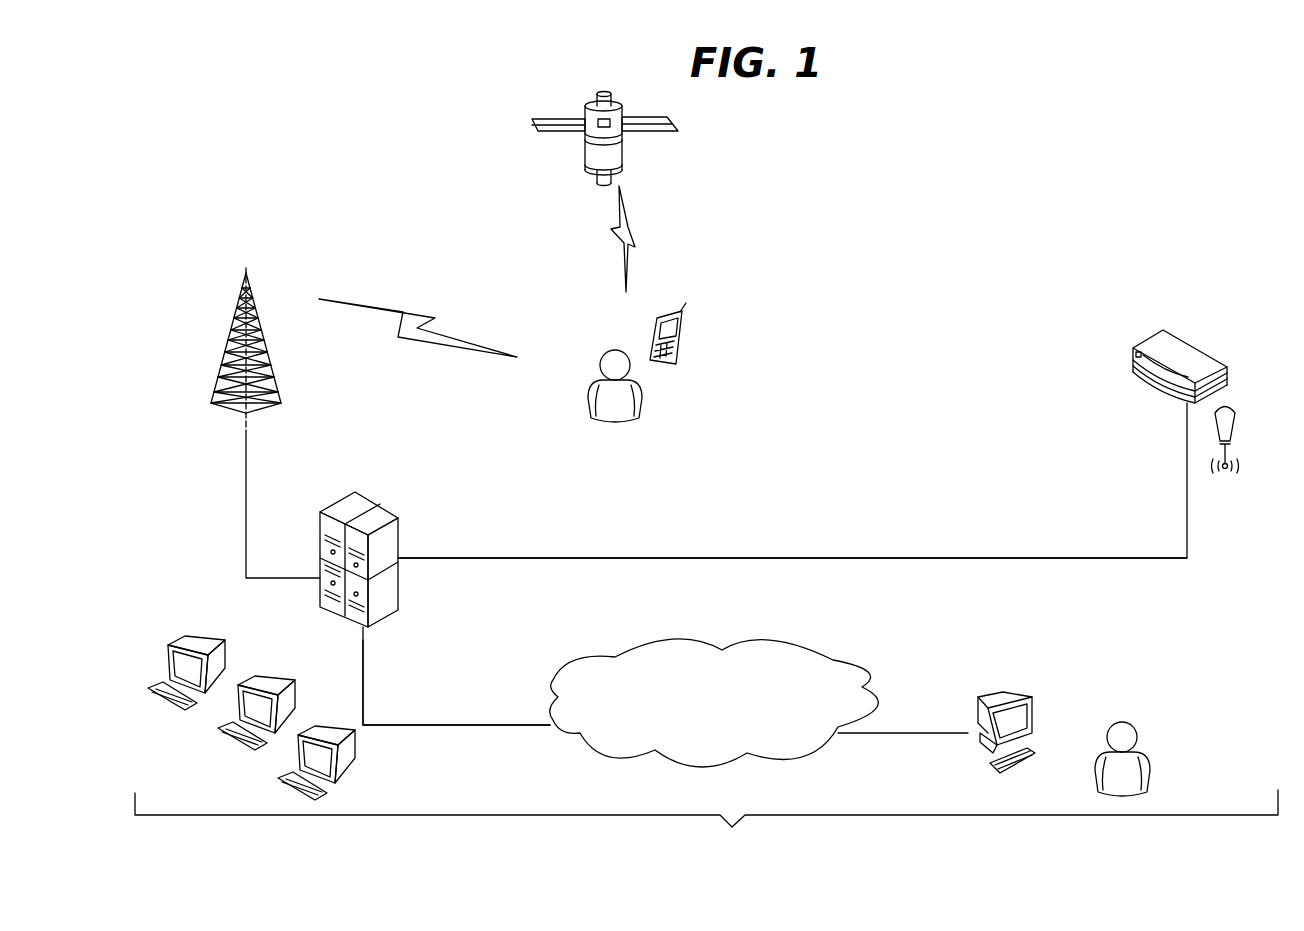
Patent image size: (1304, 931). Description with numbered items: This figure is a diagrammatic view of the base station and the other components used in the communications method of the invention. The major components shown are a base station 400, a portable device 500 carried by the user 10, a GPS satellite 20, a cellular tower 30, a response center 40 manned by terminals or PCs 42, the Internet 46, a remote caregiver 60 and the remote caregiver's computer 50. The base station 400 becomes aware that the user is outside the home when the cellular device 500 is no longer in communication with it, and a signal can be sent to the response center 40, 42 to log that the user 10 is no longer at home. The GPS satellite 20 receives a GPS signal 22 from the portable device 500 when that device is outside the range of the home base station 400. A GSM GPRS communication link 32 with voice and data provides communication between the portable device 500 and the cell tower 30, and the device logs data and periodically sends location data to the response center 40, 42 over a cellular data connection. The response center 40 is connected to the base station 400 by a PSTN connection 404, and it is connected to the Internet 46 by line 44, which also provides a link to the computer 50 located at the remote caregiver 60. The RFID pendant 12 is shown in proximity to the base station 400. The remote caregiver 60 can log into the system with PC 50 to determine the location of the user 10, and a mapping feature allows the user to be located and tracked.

The user 10 is at (618, 402).
The RFID pendant 12 is at (1235, 422).
The GPS satellite 20 is at (657, 122).
The GPS signal 22 is at (633, 236).
The cellular tower 30 is at (230, 323).
The GSM GPRS communication link 32 is at (403, 312).
The response center 40 is at (387, 505).
The terminals or PCs 42 is at (190, 640).
The line 44 is at (423, 723).
The Internet 46 is at (762, 665).
The computer 50 is at (1015, 695).
The remote caregiver 60 is at (1124, 725).
The base station 400 is at (1180, 337).
The PSTN connection 404 is at (865, 556).
The portable device 500 is at (680, 342).